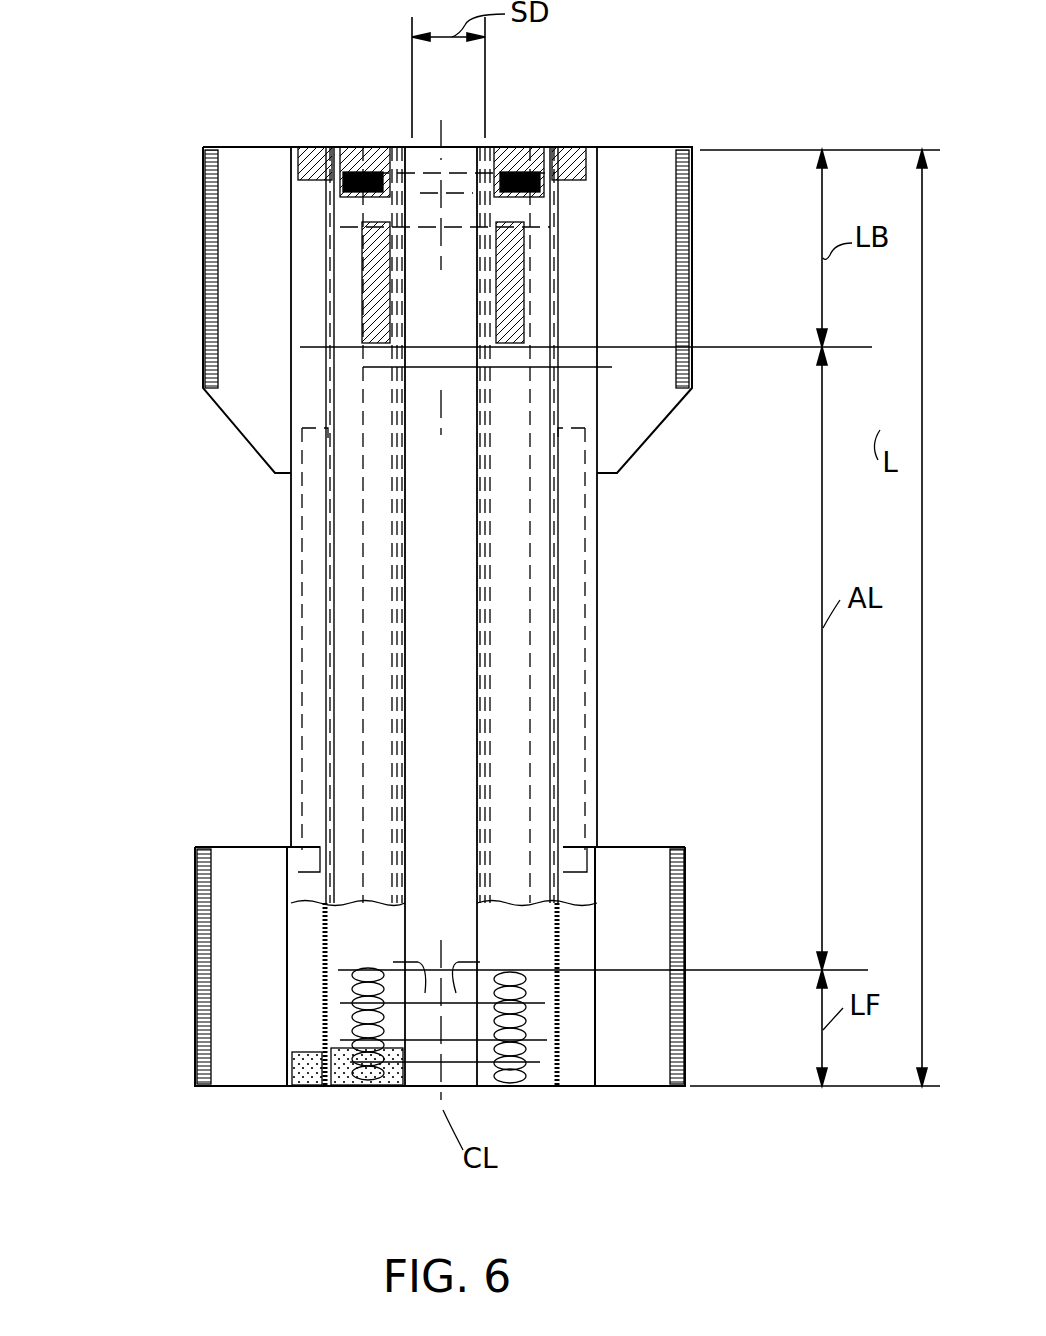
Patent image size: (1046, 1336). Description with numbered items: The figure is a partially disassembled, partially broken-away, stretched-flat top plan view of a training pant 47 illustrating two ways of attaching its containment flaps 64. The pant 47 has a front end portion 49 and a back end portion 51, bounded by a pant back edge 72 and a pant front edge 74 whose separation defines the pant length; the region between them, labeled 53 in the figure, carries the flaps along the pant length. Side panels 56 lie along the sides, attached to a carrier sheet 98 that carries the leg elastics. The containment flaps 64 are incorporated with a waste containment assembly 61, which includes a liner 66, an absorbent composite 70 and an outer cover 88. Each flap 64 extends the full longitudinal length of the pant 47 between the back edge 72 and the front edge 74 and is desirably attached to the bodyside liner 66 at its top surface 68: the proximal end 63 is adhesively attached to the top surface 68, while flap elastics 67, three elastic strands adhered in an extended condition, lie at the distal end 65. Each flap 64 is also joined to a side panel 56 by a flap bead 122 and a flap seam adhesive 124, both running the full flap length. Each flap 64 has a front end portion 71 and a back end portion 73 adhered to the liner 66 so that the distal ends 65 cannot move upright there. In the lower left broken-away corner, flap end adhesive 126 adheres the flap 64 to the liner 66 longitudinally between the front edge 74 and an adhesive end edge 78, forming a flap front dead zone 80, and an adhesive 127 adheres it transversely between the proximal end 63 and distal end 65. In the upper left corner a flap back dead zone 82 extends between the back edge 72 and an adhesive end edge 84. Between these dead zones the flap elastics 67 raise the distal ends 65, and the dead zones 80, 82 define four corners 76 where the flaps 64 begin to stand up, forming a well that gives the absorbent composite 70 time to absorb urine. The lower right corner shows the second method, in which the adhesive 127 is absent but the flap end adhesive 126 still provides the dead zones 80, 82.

The training pant 47 is at (708, 302).
The front end portion 49 is at (120, 1070).
The back end portion 51 is at (160, 255).
The intermediate section 53 is at (215, 740).
The side panel 56 is at (660, 240).
The waste containment assembly 61 is at (632, 93).
The proximal end 63 is at (558, 190).
The containment flap 64 is at (498, 430).
The distal end 65 is at (407, 565).
The liner 66 is at (420, 400).
The flap elastics 67 is at (408, 790).
The top surface 68 is at (420, 767).
The absorbent composite 70 is at (462, 146).
The front end portion 71 is at (317, 980).
The pant back edge 72 is at (258, 147).
The back end portion 73 is at (334, 232).
The pant front edge 74 is at (343, 1086).
The corners 76 is at (393, 342).
The adhesive end edge 78 is at (362, 967).
The flap front dead zone 80 is at (298, 1010).
The flap back dead zone 82 is at (358, 325).
The adhesive end edge 84 is at (504, 372).
The outer cover 88 is at (437, 1090).
The carrier sheet 98 is at (315, 543).
The flap bead 122 is at (570, 298).
The flap seam adhesive 124 is at (334, 278).
The flap end adhesive 126 is at (378, 205).
The adhesive 127 is at (305, 1086).